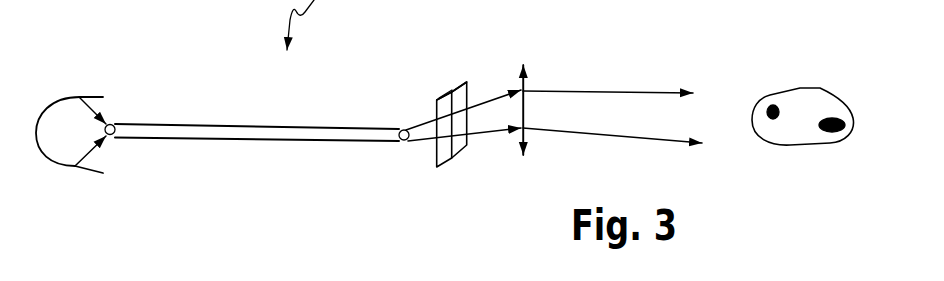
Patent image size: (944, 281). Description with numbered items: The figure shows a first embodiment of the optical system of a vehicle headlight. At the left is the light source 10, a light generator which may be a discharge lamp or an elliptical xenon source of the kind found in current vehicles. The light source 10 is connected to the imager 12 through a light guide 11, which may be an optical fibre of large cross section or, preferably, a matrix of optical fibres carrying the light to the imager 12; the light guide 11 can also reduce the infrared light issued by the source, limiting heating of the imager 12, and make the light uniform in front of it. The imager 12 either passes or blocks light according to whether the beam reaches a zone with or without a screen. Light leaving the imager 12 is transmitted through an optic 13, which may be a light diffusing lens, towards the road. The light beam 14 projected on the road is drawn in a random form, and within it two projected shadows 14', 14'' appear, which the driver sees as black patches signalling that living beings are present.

The light source 10 is at (124, 84).
The light guide 11 is at (263, 152).
The imager 12 is at (442, 95).
The optic 13 is at (518, 165).
The light beam 14 is at (802, 147).
The projected shadow 14' is at (759, 76).
The projected shadow 14'' is at (849, 89).